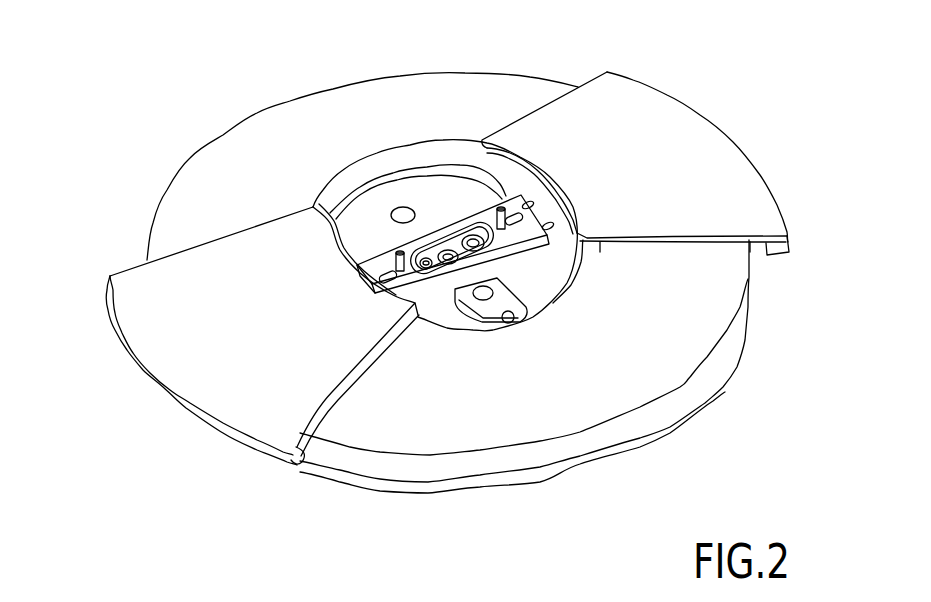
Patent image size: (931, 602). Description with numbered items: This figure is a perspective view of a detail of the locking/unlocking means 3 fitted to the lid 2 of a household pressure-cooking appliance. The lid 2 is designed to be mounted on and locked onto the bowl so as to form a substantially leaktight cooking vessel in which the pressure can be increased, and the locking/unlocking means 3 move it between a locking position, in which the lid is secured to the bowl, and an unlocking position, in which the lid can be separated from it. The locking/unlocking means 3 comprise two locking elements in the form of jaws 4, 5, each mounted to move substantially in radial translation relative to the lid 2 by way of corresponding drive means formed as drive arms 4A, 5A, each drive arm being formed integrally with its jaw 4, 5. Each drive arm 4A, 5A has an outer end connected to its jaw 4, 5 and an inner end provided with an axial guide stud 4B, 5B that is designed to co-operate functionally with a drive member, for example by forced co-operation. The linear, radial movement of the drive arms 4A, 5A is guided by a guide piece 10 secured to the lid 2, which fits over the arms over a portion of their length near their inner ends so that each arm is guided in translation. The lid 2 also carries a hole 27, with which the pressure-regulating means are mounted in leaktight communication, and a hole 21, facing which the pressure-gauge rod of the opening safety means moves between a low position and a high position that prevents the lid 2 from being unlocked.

The lid 2 is at (667, 363).
The locking/unlocking means 3 is at (549, 263).
The locking element 4 is at (292, 465).
The drive means 4A is at (207, 363).
The axial guide stud 4B is at (394, 259).
The locking element 5 is at (789, 250).
The drive means 5A is at (692, 145).
The axial guide stud 5B is at (496, 213).
The guide piece 10 is at (431, 291).
The hole 21 is at (512, 323).
The hole 27 is at (403, 207).